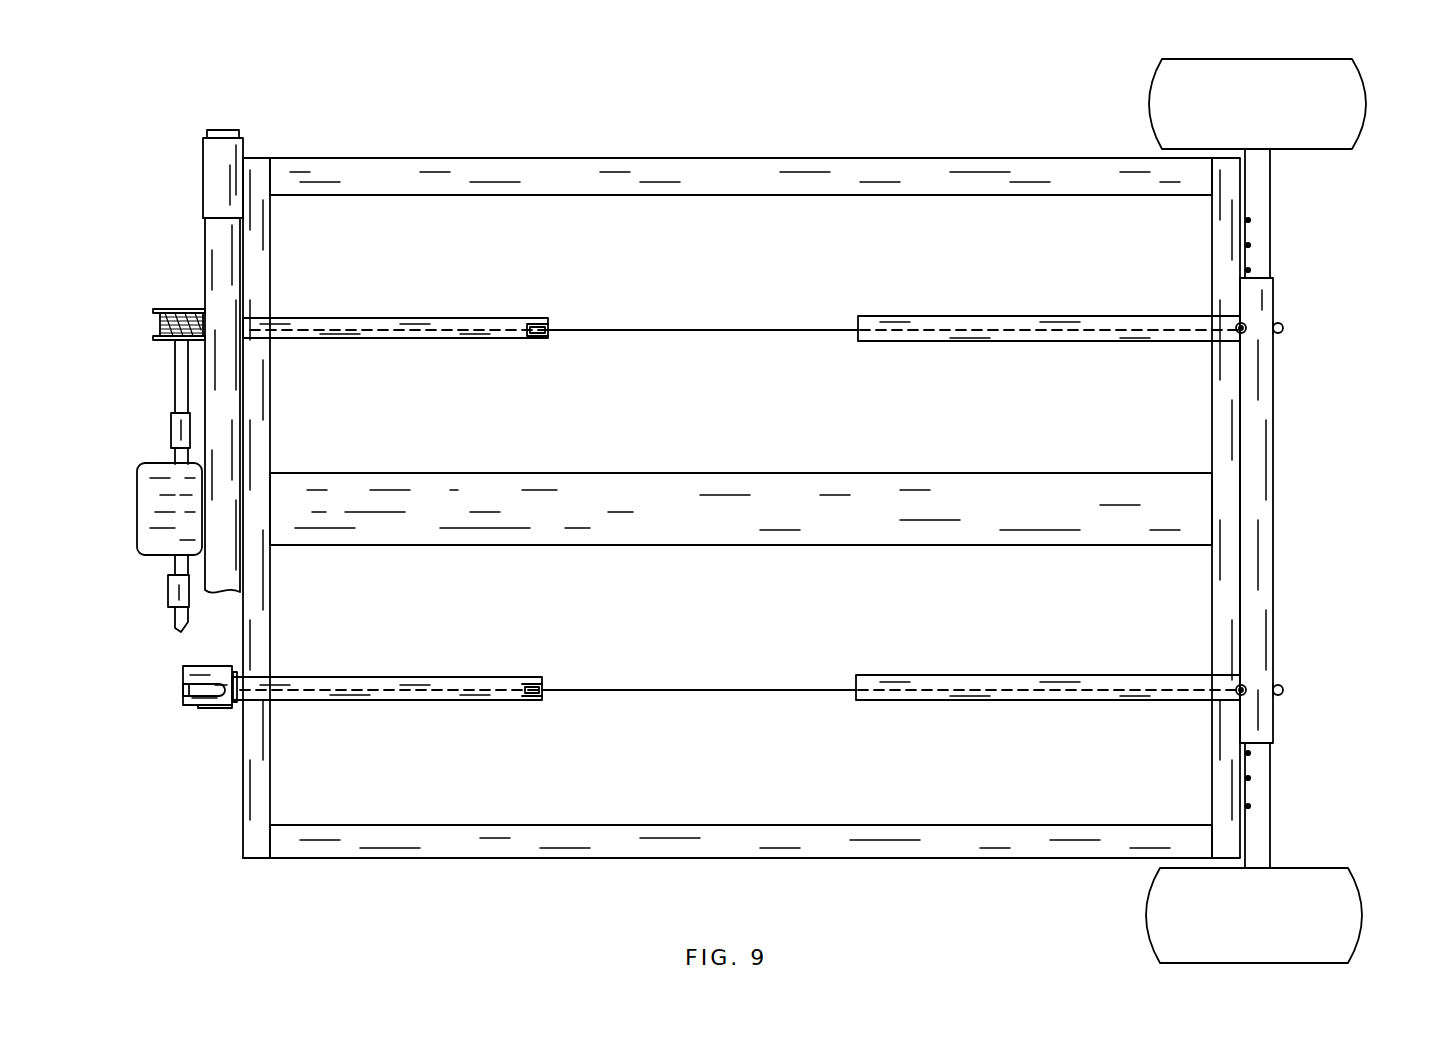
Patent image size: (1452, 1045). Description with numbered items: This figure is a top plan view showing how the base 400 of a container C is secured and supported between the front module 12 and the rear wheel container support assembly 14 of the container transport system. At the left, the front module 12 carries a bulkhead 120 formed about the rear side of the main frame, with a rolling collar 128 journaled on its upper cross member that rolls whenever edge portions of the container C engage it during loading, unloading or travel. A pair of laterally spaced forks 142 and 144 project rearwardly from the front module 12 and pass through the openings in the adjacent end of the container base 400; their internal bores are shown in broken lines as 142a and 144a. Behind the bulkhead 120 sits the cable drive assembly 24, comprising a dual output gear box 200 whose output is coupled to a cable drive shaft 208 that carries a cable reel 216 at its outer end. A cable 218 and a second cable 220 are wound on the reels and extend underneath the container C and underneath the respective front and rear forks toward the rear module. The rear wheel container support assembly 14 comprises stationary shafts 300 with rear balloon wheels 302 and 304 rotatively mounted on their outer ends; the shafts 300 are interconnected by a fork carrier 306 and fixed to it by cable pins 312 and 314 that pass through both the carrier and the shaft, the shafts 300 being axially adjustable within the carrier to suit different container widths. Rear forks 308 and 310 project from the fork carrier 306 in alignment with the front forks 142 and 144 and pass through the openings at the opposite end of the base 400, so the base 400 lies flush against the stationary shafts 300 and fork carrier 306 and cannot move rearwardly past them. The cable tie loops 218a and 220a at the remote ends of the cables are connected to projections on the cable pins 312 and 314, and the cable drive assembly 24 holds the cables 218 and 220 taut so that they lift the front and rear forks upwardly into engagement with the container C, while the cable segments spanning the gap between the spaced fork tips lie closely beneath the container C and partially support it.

The front module 12 is at (302, 138).
The rear wheel container support assembly 14 is at (1106, 126).
The cable drive assembly 24 is at (108, 500).
The bulkhead 120 is at (220, 271).
The rolling collar 128 is at (213, 187).
The fork 142 is at (394, 697).
The lower tubular member bore 142a is at (481, 692).
The fork 144 is at (432, 322).
The upper tubular member bore 144a is at (505, 330).
The dual output gear box 200 is at (156, 470).
The cable drive shaft 208 is at (178, 378).
The cable reel 216 is at (158, 310).
The cable 218 is at (680, 690).
The cable tie loop 218a is at (1278, 682).
The second cable 220 is at (682, 332).
The cable tie loop 220a is at (1276, 318).
The stationary shaft 300 is at (1258, 222).
The rear balloon wheel 302 is at (1325, 893).
The rear balloon wheel 304 is at (1340, 98).
The fork carrier 306 is at (1257, 548).
The rear fork 308 is at (997, 695).
The rear fork 310 is at (966, 320).
The cable pin 312 is at (1243, 695).
The cable pin 314 is at (1244, 333).
The container base 400 is at (253, 843).
The container C is at (763, 162).